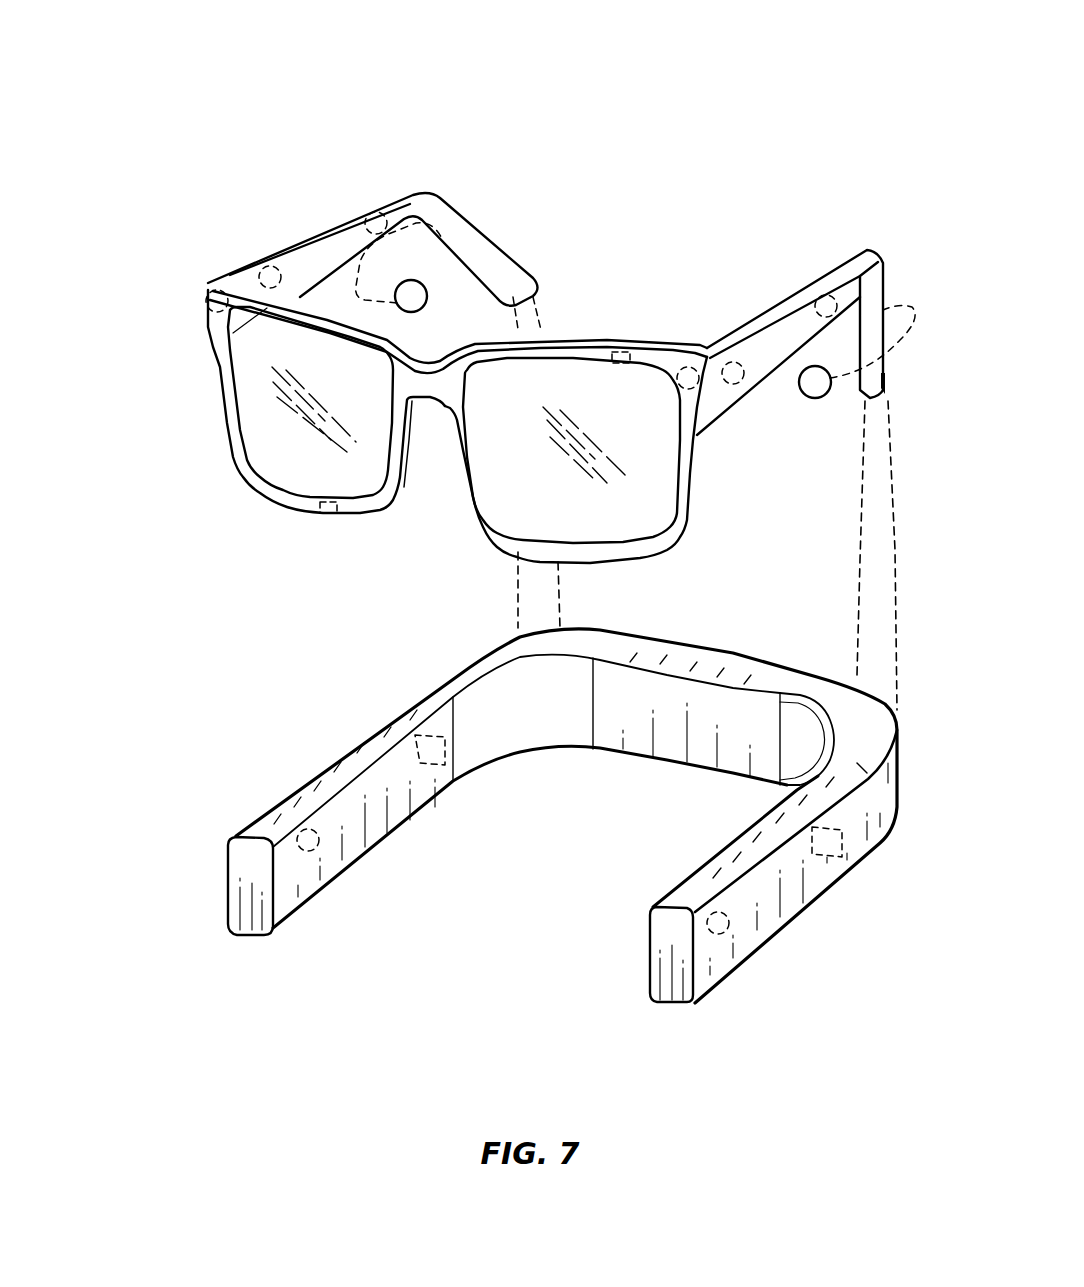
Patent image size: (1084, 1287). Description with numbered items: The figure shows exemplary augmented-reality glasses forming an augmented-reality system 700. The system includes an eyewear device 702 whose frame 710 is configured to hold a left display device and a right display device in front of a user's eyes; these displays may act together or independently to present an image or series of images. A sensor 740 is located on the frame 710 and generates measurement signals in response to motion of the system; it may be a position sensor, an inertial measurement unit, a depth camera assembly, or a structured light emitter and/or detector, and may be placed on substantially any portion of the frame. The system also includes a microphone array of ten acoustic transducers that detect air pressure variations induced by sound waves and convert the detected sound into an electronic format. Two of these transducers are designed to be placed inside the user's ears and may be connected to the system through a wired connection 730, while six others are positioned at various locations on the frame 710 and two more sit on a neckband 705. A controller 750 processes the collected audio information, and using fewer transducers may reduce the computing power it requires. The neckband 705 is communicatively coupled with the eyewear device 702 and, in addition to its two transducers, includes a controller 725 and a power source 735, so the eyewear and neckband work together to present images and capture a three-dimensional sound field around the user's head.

The augmented-reality system 700 is at (142, 106).
The eyewear device 702 is at (395, 196).
The neckband 705 is at (228, 935).
The frame 710 is at (431, 208).
The controller 725 is at (830, 847).
The wired connection 730 is at (886, 571).
The power source 735 is at (437, 753).
The sensor 740 is at (322, 510).
The controller 750 is at (614, 352).